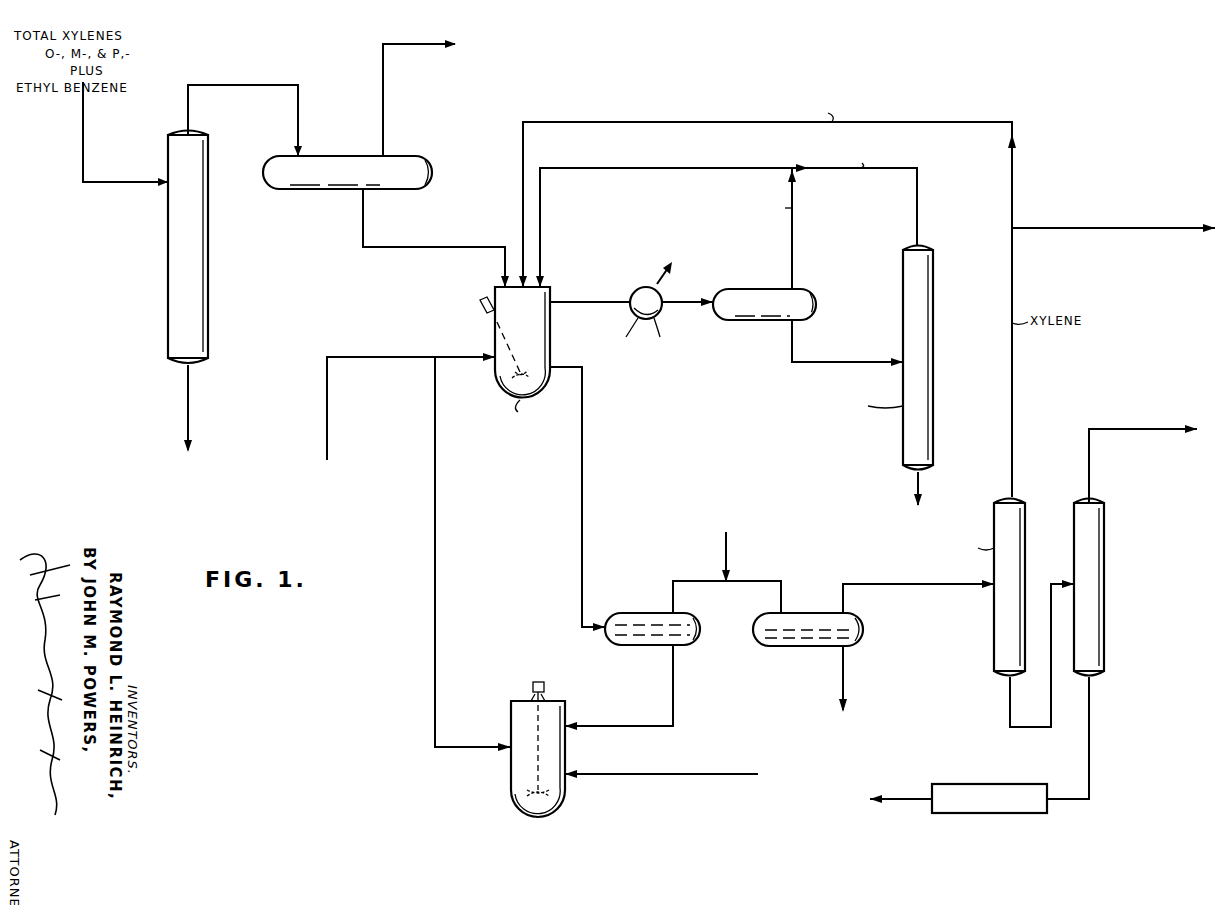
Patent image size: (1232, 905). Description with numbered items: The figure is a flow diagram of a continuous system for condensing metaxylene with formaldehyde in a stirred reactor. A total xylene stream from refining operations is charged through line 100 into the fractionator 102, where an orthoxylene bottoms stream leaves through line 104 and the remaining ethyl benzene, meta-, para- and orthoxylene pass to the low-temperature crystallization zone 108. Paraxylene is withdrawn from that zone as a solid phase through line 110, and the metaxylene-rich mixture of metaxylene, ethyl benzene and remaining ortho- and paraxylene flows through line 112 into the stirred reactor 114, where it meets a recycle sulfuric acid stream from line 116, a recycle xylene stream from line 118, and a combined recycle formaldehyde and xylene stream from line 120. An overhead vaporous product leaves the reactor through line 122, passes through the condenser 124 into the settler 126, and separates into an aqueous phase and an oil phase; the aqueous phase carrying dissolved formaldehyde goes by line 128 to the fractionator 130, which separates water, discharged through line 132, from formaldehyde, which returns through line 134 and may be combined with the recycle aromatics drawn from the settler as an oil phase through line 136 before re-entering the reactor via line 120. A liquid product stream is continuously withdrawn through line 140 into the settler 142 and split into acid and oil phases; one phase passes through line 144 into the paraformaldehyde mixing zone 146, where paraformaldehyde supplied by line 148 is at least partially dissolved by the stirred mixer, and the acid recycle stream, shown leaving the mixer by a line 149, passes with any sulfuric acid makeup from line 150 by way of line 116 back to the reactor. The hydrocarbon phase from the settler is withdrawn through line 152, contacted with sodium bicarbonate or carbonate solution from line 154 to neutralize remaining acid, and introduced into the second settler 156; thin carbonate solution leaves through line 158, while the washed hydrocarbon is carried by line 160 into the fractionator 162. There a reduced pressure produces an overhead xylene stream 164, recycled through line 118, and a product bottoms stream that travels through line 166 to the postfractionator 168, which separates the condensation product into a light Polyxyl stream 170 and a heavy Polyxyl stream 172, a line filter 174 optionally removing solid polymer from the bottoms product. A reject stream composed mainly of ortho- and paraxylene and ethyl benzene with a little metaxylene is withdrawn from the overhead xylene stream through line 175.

The line 100 is at (83, 158).
The fractionator 102 is at (178, 250).
The line 104 is at (188, 412).
The low-temperature crystallization zone 108 is at (345, 156).
The line 110 is at (383, 75).
The line 112 is at (421, 247).
The stirred reactor 114 is at (534, 333).
The line 116 is at (468, 357).
The line 118 is at (523, 170).
The line 120 is at (540, 233).
The line 122 is at (600, 302).
The condenser 124 is at (670, 316).
The settler 126 is at (744, 289).
The line 128 is at (850, 362).
The fractionator 130 is at (903, 290).
The line 132 is at (912, 486).
The line 134 is at (917, 212).
The line 136 is at (792, 247).
The line 140 is at (582, 508).
The settler 142 is at (645, 613).
The line 144 is at (673, 672).
The paraformaldehyde mixing zone 146 is at (515, 712).
The line 148 is at (683, 776).
The mixer outlet line to reactor 149 is at (435, 602).
The line 150 is at (327, 424).
The line 152 is at (693, 581).
The line 154 is at (726, 553).
The second settler 156 is at (855, 619).
The line 158 is at (843, 670).
The line 160 is at (958, 584).
The fractionator 162 is at (941, 587).
The overhead xylene stream 164 is at (1012, 393).
The line 166 is at (1036, 727).
The postfractionator 168 is at (1095, 570).
The light Polyxyl stream 170 is at (1089, 460).
The heavy Polyxyl stream 172 is at (1089, 735).
The line filter 174 is at (978, 784).
The line 175 is at (1120, 228).